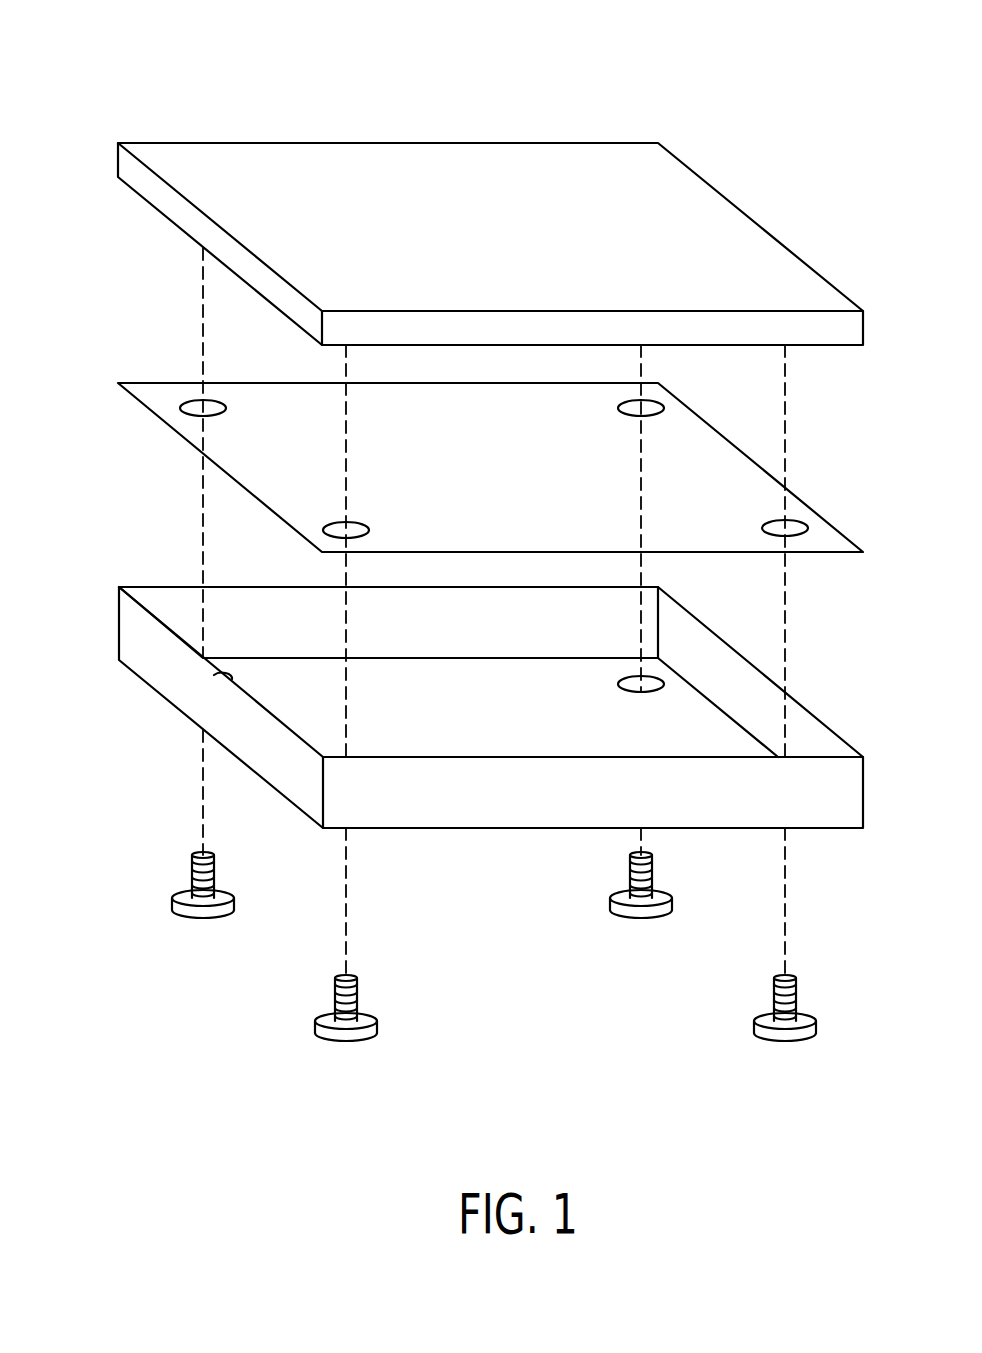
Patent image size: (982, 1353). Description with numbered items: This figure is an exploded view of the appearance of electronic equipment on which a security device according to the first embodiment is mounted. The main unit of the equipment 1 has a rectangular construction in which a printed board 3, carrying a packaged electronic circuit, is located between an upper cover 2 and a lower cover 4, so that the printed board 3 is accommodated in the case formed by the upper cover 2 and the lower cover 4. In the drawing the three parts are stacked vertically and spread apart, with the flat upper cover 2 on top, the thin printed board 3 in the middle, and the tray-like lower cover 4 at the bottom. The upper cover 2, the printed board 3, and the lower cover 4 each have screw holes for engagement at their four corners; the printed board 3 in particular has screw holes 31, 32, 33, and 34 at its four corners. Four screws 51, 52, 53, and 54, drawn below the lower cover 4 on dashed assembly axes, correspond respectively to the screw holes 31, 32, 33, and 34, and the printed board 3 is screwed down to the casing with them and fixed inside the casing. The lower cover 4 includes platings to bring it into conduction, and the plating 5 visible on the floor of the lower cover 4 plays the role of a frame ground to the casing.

The main unit of the equipment 1 is at (190, 66).
The upper cover 2 is at (147, 157).
The printed board 3 is at (492, 432).
The screw hole for engagement 31 is at (217, 402).
The screw hole for engagement 32 is at (369, 529).
The screw hole for engagement 33 is at (662, 407).
The screw hole for engagement 34 is at (810, 528).
The lower cover 4 is at (466, 707).
The plating 5 is at (660, 685).
The screw 51 is at (182, 897).
The screw 52 is at (327, 1020).
The screw 53 is at (622, 897).
The screw 54 is at (767, 1020).